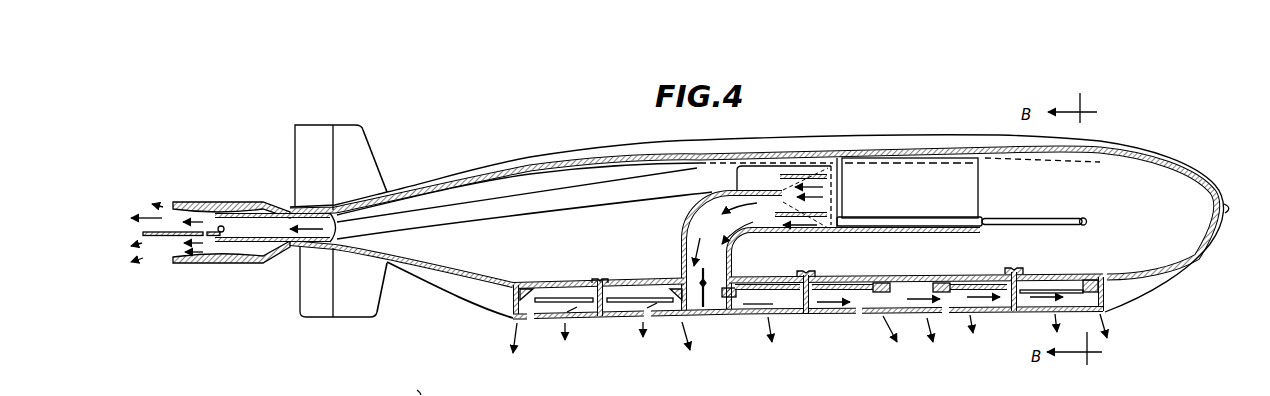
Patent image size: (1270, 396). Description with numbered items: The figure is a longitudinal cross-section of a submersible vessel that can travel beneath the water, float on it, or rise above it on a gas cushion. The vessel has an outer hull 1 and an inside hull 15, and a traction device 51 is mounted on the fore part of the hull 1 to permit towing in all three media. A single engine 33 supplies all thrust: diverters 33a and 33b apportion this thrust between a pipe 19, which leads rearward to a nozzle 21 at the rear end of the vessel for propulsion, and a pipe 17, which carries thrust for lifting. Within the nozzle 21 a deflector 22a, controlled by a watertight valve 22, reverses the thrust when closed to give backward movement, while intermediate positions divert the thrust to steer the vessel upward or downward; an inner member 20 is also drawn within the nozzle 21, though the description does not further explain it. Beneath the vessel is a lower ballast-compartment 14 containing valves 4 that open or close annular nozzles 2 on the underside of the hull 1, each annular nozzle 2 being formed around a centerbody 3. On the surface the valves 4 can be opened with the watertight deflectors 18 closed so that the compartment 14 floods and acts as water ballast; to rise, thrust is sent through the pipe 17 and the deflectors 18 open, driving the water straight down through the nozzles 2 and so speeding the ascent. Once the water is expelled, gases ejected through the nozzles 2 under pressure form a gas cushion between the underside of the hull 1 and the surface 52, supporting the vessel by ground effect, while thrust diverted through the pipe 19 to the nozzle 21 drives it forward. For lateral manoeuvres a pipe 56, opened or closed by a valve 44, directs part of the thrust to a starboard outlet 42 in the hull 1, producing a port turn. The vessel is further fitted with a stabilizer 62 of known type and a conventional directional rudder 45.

The hull 1 is at (603, 143).
The annular nozzle 2 is at (531, 323).
The centerbody 3 is at (602, 322).
The valve 4 is at (527, 291).
The lower ballast-compartment 14 is at (905, 317).
The inside hull 15 is at (1187, 161).
The pipe 17 is at (737, 251).
The watertight deflector 18 is at (700, 272).
The pipe 19 is at (513, 190).
The inner tube 20 is at (260, 250).
The nozzle 21 is at (221, 266).
The watertight valve 22 is at (223, 226).
The deflector 22a is at (160, 237).
The engine 33 is at (958, 199).
The diverter 33a is at (822, 213).
The diverter 33b is at (787, 175).
The starboard outlet 42 is at (1084, 218).
The valve 44 is at (1085, 224).
The directional rudder 45 is at (312, 144).
The traction device 51 is at (1231, 207).
The surface 52 is at (407, 387).
The pipe 56 is at (895, 228).
The stabilizer 62 is at (355, 148).